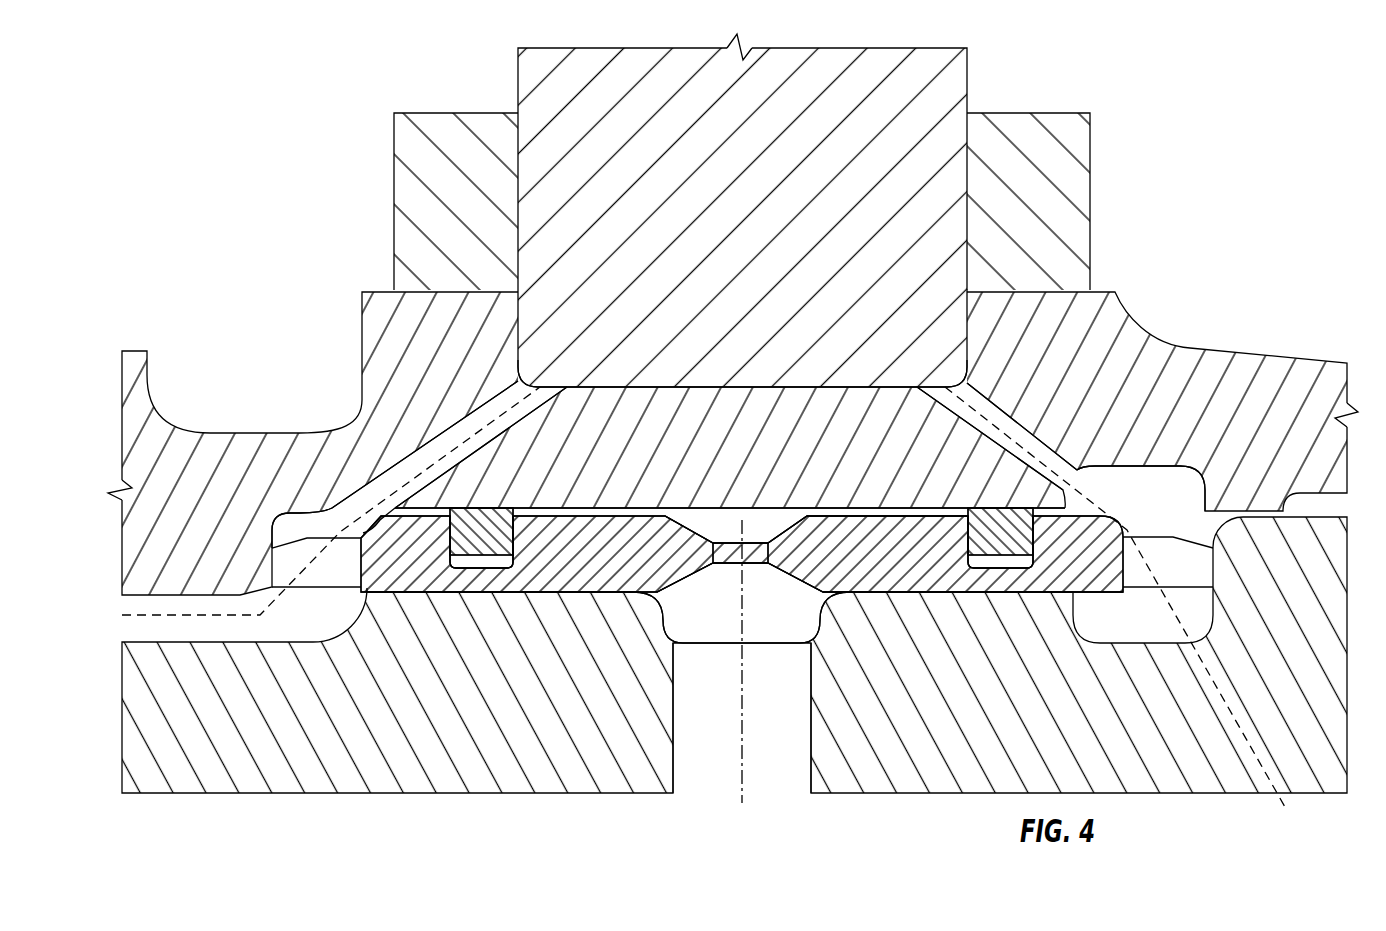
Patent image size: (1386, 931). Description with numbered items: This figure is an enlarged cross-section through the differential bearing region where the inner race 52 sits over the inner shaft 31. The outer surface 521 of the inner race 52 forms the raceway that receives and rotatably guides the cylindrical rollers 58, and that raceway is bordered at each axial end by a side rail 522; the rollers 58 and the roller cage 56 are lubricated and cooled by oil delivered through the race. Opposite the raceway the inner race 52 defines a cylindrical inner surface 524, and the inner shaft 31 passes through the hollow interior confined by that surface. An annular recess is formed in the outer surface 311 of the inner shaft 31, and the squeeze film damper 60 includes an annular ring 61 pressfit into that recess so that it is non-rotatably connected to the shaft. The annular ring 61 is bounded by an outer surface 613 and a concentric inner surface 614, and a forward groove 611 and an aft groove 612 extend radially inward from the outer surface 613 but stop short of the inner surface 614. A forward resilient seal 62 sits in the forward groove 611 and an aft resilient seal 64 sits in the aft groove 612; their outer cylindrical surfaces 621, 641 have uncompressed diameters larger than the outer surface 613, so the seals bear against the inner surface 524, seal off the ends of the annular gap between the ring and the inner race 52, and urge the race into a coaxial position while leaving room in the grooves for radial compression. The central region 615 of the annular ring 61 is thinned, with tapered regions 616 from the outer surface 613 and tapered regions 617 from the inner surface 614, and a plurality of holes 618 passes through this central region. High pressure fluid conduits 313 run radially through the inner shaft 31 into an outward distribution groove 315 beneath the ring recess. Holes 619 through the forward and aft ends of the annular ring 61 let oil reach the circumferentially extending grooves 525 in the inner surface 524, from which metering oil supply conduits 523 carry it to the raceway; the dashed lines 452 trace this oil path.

The inner shaft 31 is at (190, 783).
The outer surface of the inner shaft 311 is at (607, 585).
The high pressure fluid conduit 313 is at (673, 775).
The outward distribution groove 315 is at (658, 625).
The dashed lines 452 is at (162, 620).
The inner race 52 is at (1275, 370).
The outer surface of the inner race 521 is at (665, 387).
The side rail 522 is at (503, 323).
The oil supply conduit 523 is at (450, 430).
The cylindrical inner surface of the inner race 524 is at (680, 517).
The circumferentially extending groove 525 is at (290, 505).
The roller cage 56 is at (397, 190).
The cylindrical roller 58 is at (604, 50).
The squeeze film damper 60 is at (501, 606).
The annular ring 61 is at (568, 573).
The forward groove 611 is at (477, 563).
The aft groove 612 is at (997, 558).
The outer surface of the annular ring 613 is at (898, 517).
The inner surface of the annular ring 614 is at (910, 593).
The central region 615 is at (748, 562).
The tapered regions from the outer surface 616 is at (782, 533).
The tapered regions from the inner surface 617 is at (697, 570).
The holes through the central region 618 is at (733, 553).
The holes through the forward and aft ends of the annular ring 619 is at (338, 573).
The forward resilient seal 62 is at (505, 523).
The outer cylindrical surface of the forward resilient seal 621 is at (468, 510).
The aft resilient seal 64 is at (973, 520).
The outer cylindrical surface of the aft resilient seal 641 is at (1008, 520).